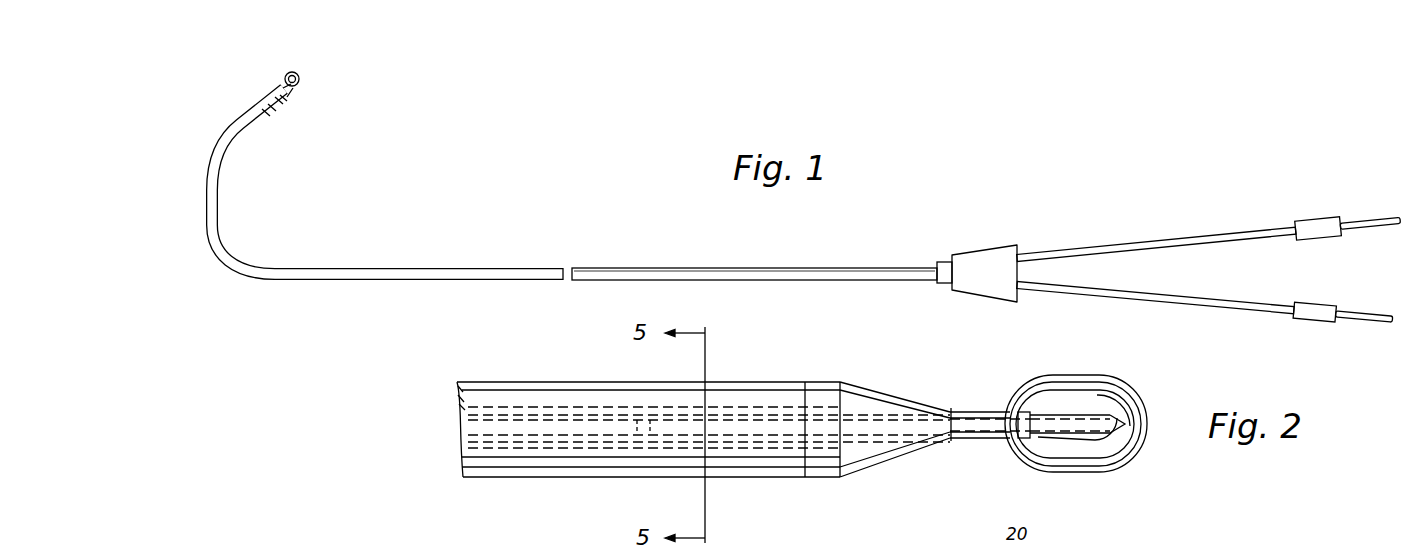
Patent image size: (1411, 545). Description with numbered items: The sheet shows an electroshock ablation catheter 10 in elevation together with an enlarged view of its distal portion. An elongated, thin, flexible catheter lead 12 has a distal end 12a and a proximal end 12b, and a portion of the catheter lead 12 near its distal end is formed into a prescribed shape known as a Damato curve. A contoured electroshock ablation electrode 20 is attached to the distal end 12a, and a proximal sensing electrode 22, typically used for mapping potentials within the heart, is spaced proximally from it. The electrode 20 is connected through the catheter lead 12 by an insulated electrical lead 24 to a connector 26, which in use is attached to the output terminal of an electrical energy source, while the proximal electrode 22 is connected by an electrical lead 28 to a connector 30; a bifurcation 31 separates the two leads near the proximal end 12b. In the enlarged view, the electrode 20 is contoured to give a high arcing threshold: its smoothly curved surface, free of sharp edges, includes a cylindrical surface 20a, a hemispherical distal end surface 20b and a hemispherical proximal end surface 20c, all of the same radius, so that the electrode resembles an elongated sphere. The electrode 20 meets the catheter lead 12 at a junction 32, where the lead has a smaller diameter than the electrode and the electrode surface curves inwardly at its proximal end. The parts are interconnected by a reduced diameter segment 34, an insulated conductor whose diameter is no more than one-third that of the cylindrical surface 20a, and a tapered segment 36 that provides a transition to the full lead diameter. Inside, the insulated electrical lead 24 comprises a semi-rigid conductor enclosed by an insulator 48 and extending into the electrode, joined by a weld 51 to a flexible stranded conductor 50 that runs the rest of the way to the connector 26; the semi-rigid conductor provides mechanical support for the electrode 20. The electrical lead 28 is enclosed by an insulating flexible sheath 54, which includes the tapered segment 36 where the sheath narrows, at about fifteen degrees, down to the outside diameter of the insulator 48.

In FIG. 1, the electroshock ablation catheter 10 is at (806, 215).
In FIG. 1, the catheter lead 12 is at (582, 183).
In FIG. 2, the catheter lead 12 is at (704, 427).
In FIG. 1, the distal end 12a is at (282, 95).
In FIG. 1, the proximal end 12b is at (925, 262).
In FIG. 1, the contoured electroshock ablation electrode 20 is at (300, 76).
In FIG. 2, the contoured electroshock ablation electrode 20 is at (1078, 419).
In FIG. 2, the cylindrical surface 20a is at (1095, 375).
In FIG. 2, the hemispherical distal end surface 20b is at (1138, 397).
In FIG. 2, the hemispherical proximal end surface 20c is at (1010, 455).
In FIG. 1, the proximal sensing electrode 22 is at (268, 108).
In FIG. 2, the proximal sensing electrode 22 is at (758, 382).
In FIG. 1, the insulated electrical lead 24 is at (1207, 229).
In FIG. 2, the insulated electrical lead 24 is at (584, 406).
In FIG. 1, the connector 26 is at (1382, 220).
In FIG. 1, the electrical lead 28 is at (1203, 318).
In FIG. 2, the electrical lead 28 is at (543, 450).
In FIG. 1, the connector 30 is at (1377, 322).
In FIG. 1, the bifurcation 31 is at (977, 252).
In FIG. 2, the junction 32 is at (1000, 410).
In FIG. 2, the reduced diameter segment 34 is at (973, 442).
In FIG. 2, the tapered segment 36 is at (908, 458).
In FIG. 2, the insulator 48 is at (977, 410).
In FIG. 2, the flexible stranded conductor 50 is at (595, 435).
In FIG. 2, the weld 51 is at (640, 423).
In FIG. 2, the flexible sheath 54 is at (828, 382).